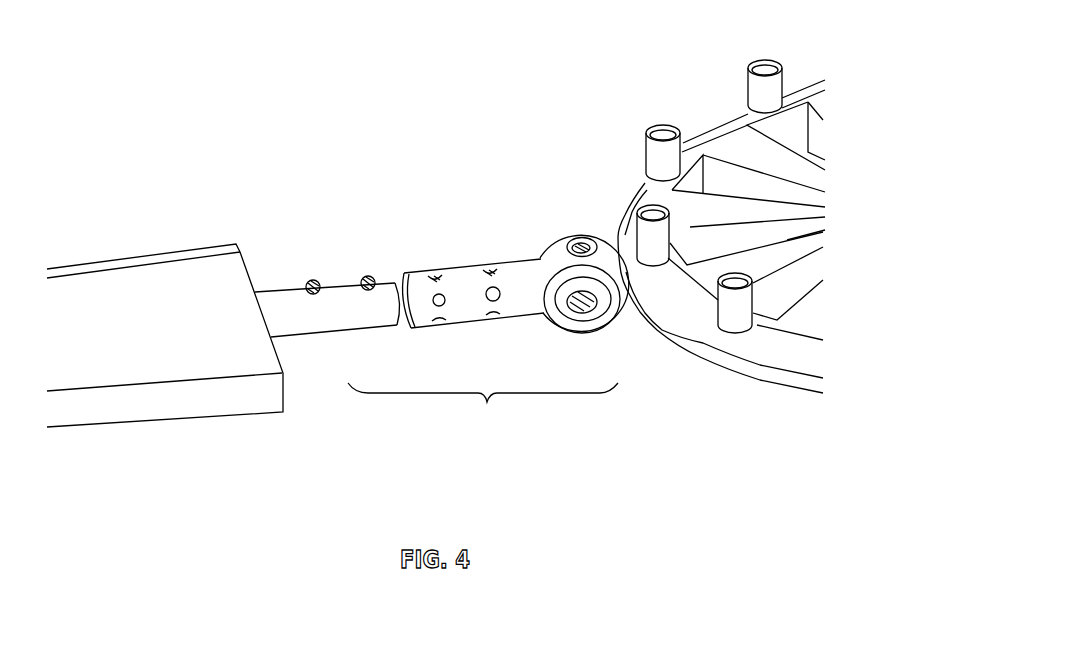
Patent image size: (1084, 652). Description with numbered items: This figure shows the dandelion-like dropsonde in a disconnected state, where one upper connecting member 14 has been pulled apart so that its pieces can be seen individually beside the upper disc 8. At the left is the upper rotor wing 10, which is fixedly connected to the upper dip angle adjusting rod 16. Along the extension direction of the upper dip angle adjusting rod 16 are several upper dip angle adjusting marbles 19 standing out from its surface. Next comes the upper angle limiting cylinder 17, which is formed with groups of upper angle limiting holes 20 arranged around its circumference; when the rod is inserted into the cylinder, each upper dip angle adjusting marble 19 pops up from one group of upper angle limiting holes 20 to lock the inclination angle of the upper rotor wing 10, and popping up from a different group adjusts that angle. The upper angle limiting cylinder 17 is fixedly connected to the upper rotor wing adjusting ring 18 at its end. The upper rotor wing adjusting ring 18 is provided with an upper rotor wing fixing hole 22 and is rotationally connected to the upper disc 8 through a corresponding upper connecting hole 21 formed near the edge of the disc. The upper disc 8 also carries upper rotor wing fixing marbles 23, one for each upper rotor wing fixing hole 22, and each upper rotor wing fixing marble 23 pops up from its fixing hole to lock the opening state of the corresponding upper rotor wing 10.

The upper disc 8 is at (767, 358).
The upper rotor wing 10 is at (203, 272).
The upper connecting member 14 is at (483, 409).
The upper dip angle adjusting rod 16 is at (312, 315).
The upper angle limiting cylinder 17 is at (470, 309).
The upper rotor wing adjusting ring 18 is at (565, 330).
The upper dip angle adjusting marble 19 is at (315, 282).
The upper angle limiting hole 20 is at (433, 273).
The upper connecting hole 21 is at (720, 172).
The upper rotor wing fixing hole 22 is at (580, 242).
The upper rotor wing fixing marble 23 is at (648, 213).